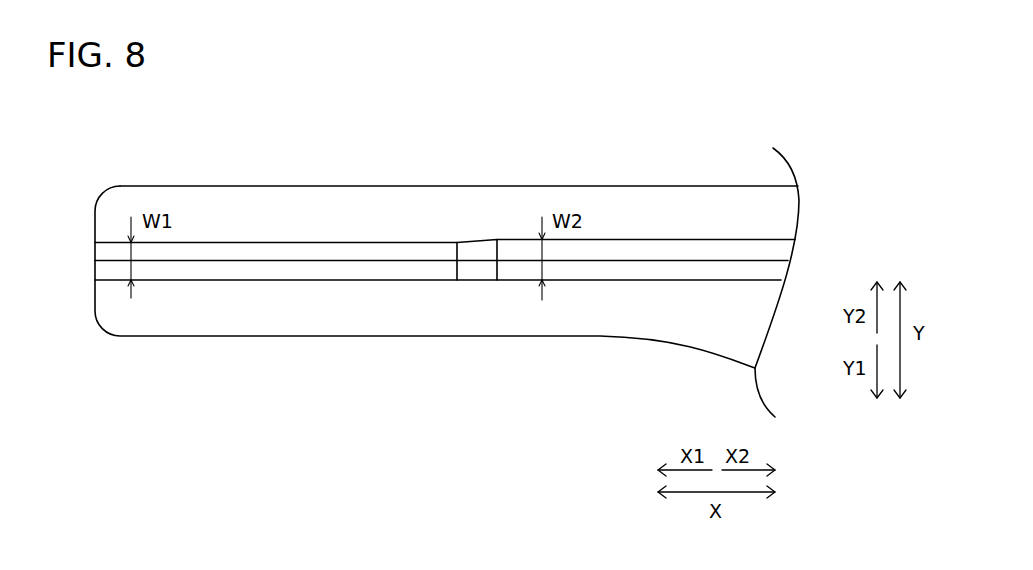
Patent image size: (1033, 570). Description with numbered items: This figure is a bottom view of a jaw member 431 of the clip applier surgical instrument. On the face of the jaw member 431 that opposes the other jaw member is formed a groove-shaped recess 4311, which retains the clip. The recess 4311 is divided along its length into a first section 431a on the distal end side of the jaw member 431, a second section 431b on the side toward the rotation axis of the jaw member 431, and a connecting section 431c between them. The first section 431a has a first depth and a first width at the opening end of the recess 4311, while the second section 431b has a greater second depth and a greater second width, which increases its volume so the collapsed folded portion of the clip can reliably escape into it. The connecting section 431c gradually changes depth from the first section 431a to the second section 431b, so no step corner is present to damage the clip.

The jaw member 431 is at (627, 186).
The first section 431a is at (233, 272).
The second section 431b is at (610, 273).
The connecting section 431c is at (473, 273).
The groove-shaped recess 4311 is at (395, 272).